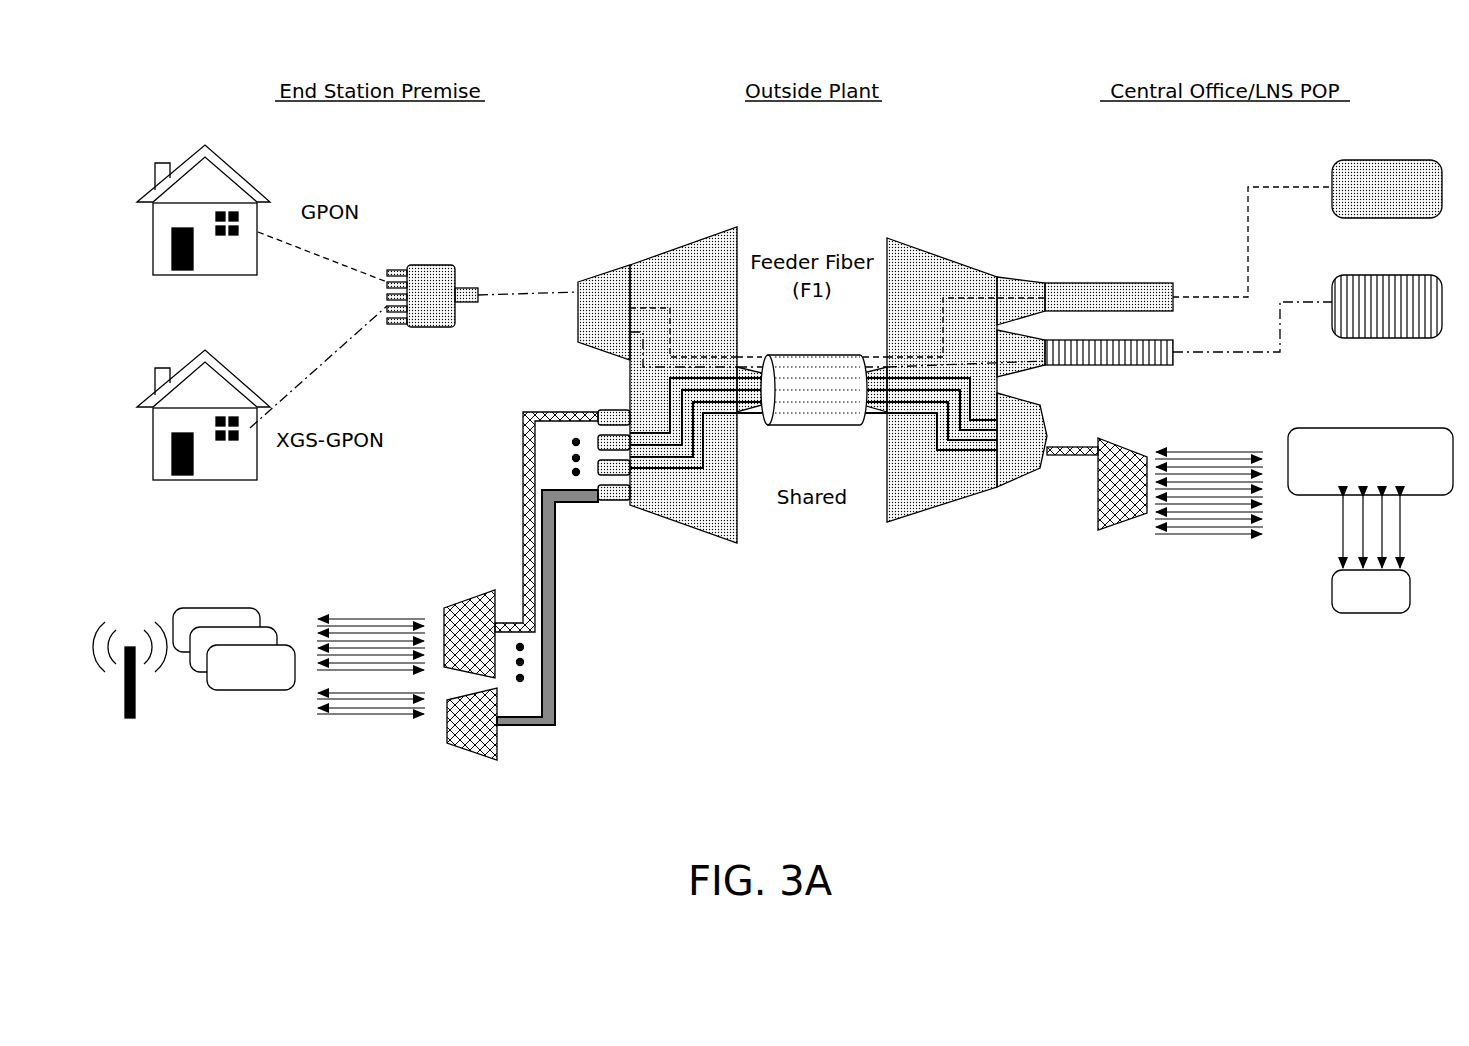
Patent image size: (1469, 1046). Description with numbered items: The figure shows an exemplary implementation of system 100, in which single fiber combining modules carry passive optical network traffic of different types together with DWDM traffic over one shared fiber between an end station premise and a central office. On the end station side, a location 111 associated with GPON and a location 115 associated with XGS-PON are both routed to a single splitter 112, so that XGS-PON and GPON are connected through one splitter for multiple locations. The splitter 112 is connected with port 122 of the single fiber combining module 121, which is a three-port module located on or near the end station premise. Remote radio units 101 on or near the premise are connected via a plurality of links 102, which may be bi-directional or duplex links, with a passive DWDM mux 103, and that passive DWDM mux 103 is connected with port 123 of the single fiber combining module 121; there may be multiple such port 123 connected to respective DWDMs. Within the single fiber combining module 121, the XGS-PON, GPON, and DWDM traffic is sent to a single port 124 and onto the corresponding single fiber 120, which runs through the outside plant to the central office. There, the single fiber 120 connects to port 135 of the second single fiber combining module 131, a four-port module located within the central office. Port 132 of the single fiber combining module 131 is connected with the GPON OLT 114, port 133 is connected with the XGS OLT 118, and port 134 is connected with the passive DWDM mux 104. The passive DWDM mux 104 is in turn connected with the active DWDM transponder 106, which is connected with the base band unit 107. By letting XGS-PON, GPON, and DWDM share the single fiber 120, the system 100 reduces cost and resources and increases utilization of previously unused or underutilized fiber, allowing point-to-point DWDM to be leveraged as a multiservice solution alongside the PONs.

The system 100 is at (232, 57).
The remote radio unit 101 is at (258, 690).
The links 102 is at (362, 795).
The passive DWDM mux 103 is at (470, 598).
The passive DWDM mux 104 is at (1122, 447).
The active DWDM transponder 106 is at (1317, 427).
The base band unit 107 is at (1410, 592).
The location 111 is at (222, 170).
The splitter 112 is at (442, 237).
The GPON optical line termination 114 is at (1348, 163).
The location 115 is at (222, 375).
The XGS OLT 118 is at (1350, 278).
The single fiber 120 is at (795, 428).
The single fiber combining module 121 is at (700, 240).
The port 122 is at (602, 272).
The port 123 is at (618, 410).
The single port 124 is at (745, 372).
The single fiber combining module 131 is at (918, 243).
The port 132 is at (1023, 283).
The port 133 is at (1020, 372).
The port 134 is at (1010, 475).
The port 135 is at (877, 372).